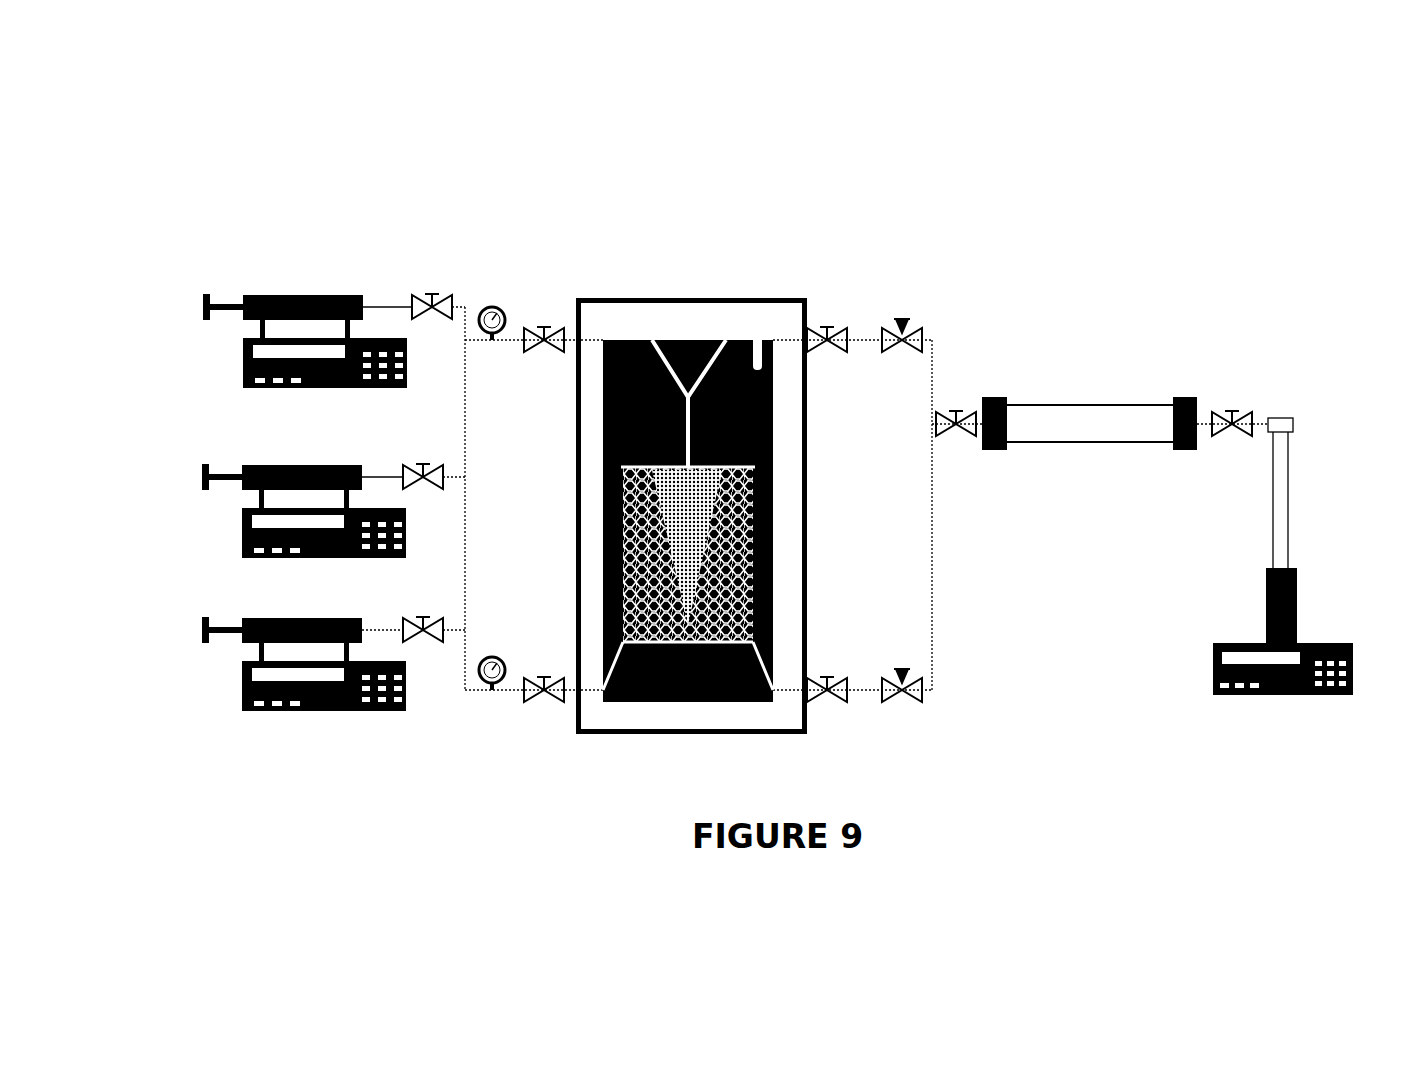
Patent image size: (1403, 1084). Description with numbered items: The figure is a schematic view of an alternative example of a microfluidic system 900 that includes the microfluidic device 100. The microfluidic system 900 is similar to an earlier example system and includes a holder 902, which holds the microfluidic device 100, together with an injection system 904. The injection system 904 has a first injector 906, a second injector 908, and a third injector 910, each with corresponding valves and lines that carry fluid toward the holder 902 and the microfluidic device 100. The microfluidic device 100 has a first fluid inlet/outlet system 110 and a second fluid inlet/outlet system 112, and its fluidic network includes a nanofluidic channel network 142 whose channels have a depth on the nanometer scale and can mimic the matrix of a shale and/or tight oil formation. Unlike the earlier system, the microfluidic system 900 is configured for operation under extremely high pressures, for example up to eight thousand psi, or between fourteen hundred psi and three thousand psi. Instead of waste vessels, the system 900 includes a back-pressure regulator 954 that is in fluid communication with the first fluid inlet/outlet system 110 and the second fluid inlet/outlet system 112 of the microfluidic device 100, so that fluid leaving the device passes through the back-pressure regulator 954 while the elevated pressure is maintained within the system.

The microfluidic system 900 is at (1135, 146).
The holder 902 is at (645, 298).
The injection system 904 is at (570, 765).
The first injector 906 is at (230, 347).
The second injector 908 is at (220, 503).
The third injector 910 is at (225, 660).
The first fluid inlet/outlet system 110 is at (700, 354).
The microfluidic device 100 is at (758, 338).
The second fluid inlet/outlet system 112 is at (746, 660).
The nanofluidic channel network 142 is at (898, 538).
The back-pressure regulator 954 is at (1190, 385).